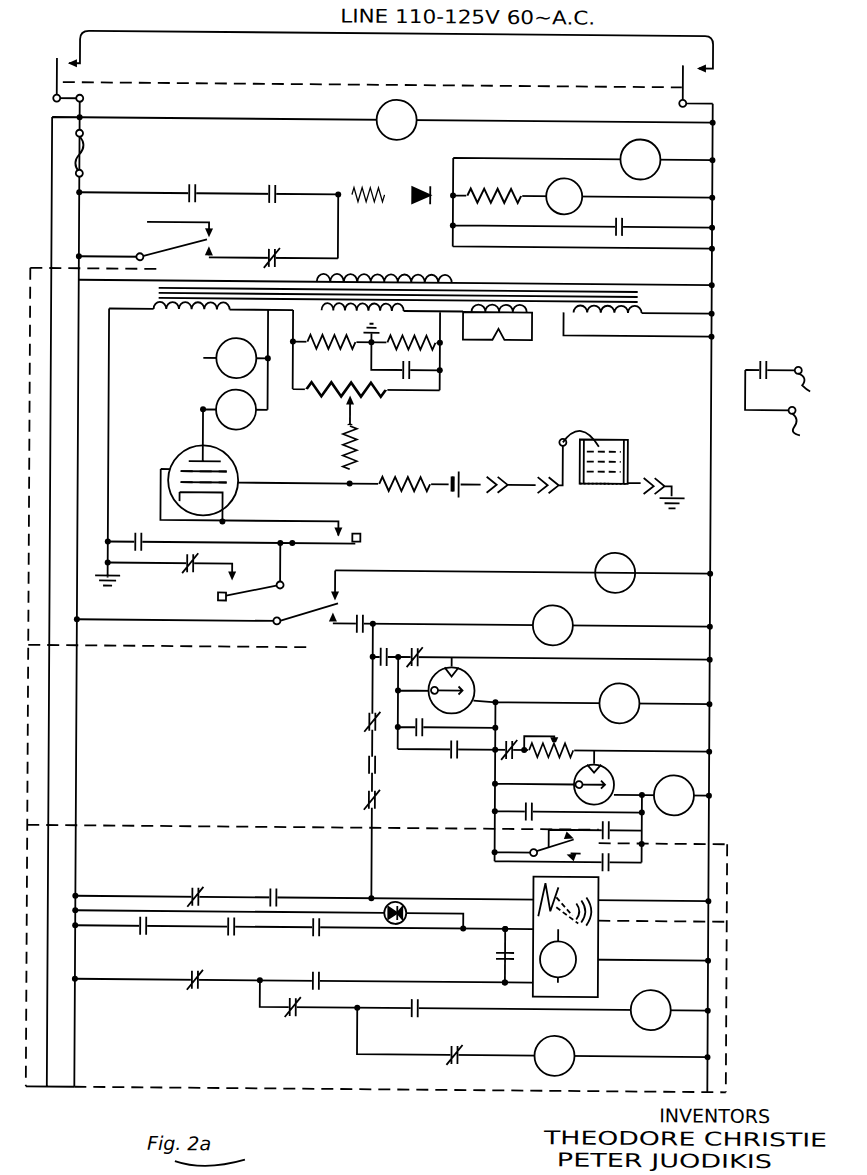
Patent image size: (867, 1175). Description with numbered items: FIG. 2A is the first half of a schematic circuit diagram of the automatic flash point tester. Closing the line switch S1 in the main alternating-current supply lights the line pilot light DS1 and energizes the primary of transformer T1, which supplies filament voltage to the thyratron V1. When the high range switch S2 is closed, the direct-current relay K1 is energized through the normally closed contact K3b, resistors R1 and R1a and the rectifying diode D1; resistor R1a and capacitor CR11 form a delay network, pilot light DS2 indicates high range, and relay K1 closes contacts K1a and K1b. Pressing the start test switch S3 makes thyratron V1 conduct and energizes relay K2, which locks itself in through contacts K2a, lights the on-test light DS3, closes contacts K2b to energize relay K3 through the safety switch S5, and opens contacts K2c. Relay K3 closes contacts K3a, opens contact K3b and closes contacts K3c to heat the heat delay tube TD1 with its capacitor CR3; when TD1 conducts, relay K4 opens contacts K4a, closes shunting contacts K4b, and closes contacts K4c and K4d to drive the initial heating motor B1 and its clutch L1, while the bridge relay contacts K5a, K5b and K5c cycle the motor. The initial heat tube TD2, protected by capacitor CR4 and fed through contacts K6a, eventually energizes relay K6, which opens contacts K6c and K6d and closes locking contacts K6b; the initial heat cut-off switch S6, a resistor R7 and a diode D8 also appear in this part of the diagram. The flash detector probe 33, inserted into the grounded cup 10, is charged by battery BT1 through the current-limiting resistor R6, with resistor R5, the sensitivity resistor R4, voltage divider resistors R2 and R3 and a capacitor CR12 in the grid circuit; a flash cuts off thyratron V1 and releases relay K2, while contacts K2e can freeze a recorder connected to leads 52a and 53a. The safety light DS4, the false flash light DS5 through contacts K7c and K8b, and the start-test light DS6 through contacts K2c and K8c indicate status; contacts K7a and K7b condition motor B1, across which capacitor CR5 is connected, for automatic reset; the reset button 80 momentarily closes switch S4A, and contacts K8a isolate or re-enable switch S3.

The line switch S1 is at (735, 84).
The LINE pilot light DS1 is at (397, 120).
The high range pilot light DS2 is at (640, 159).
The relay contacts K1a is at (190, 187).
The relay contacts K3a is at (270, 187).
The resistor R1 is at (370, 170).
The rectifying diode D1 is at (415, 186).
The resistor R1a is at (498, 176).
The D.-C. relay K1 is at (564, 196).
The capacitor CR11 is at (608, 210).
The relay contacts K3b is at (264, 252).
The high range switch S2 is at (197, 250).
The transformer T1 is at (366, 293).
The on test light DS3 is at (236, 358).
The relay K2 is at (236, 409).
The resistor R2 is at (348, 354).
The resistor R3 is at (402, 339).
The capacitor CR12 is at (420, 370).
The variable resistor R4 is at (340, 402).
The resistor R5 is at (342, 446).
The thyratron tube V1 is at (238, 468).
The resistor R6 is at (408, 462).
The battery BT1 is at (470, 460).
The flash detector probe 33 is at (571, 432).
The liquid container 10 is at (638, 446).
The relay contacts K2e is at (771, 360).
The lead 52a is at (820, 390).
The lead 53a is at (815, 435).
The relay contacts K2a is at (130, 536).
The reset button 80 is at (358, 534).
The reset switch S4A is at (366, 564).
The relay contacts K8a is at (194, 574).
The start test switch S3 is at (260, 594).
The safety switch S5 is at (308, 616).
The safety pilot light DS4 is at (522, 571).
The relay contacts K2b is at (364, 620).
The relay K3 is at (553, 625).
The relay contacts K3c is at (370, 658).
The relay contacts K4a is at (414, 652).
The heat delay tube TD1 is at (468, 674).
The relay K4 is at (619, 703).
The relay contacts K6c is at (364, 724).
The relay contacts K4c is at (364, 766).
The relay contacts K5a is at (364, 800).
The capacitor CR3 is at (420, 736).
The relay contacts K4b is at (455, 756).
The relay contacts K6a is at (506, 748).
The potentiometer R7 is at (570, 746).
The initial heat tube TD2 is at (612, 772).
The relay K6 is at (674, 795).
The capacitor CR4 is at (514, 808).
The initial heat cut-off switch S6 is at (534, 858).
The relay contacts K1b is at (618, 826).
The relay contacts K6b is at (616, 866).
The relay contacts K5b is at (214, 878).
The relay contacts K7a is at (290, 878).
The diode D8 is at (404, 904).
The clutch L1 is at (553, 890).
The relay contacts K4d is at (140, 936).
The relay contacts K5c is at (237, 936).
The relay contacts K6d is at (324, 934).
The capacitor CR5 is at (494, 960).
The initial heating motor B1 is at (558, 956).
The relay contacts K2c is at (192, 976).
The relay contacts K7b is at (324, 980).
The relay contacts K7c is at (292, 1014).
The relay contacts K8b is at (423, 1006).
The false flash light DS5 is at (651, 1010).
The relay contacts K8c is at (450, 1048).
The start test light DS6 is at (554, 1056).